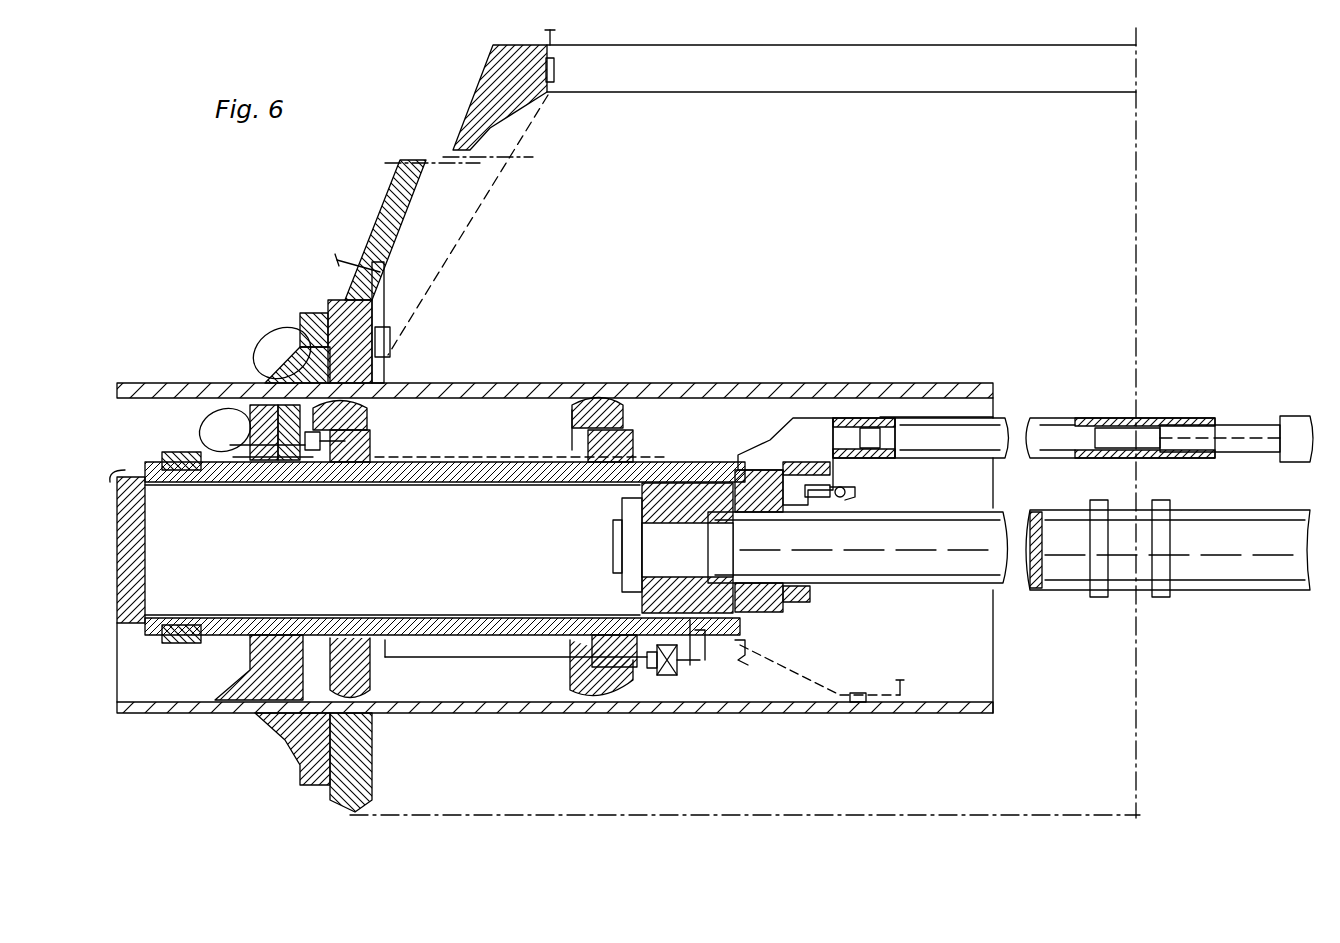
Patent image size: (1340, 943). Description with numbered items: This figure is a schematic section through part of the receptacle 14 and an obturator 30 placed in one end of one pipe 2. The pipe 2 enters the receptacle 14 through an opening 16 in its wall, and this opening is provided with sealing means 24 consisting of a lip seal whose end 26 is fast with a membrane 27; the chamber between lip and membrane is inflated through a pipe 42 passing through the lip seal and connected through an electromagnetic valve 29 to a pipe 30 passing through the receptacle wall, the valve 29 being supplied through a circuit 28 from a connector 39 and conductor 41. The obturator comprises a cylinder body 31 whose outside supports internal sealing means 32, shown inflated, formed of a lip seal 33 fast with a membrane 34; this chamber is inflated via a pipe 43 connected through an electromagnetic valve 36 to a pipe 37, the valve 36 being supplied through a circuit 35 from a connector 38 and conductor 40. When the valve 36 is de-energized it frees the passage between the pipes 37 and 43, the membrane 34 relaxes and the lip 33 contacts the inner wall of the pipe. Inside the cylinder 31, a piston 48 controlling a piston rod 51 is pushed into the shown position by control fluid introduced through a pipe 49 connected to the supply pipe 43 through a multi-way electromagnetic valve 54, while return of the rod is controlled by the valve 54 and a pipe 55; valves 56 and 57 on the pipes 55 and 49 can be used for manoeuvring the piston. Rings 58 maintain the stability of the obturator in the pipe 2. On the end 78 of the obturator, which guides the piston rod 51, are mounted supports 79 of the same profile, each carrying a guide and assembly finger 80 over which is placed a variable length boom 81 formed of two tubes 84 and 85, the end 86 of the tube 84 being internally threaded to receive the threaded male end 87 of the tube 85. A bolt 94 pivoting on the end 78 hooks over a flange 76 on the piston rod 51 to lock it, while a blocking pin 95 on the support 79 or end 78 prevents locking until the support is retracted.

The pipe 2 is at (130, 388).
The receptacle 14 is at (455, 150).
The opening 16 is at (370, 713).
The sealing means 24 is at (305, 290).
The end of the lip 26 is at (262, 382).
The membrane 27 is at (263, 345).
The circuit 28 is at (440, 255).
The electromagnetic valve 29 is at (392, 345).
The pipe / obturator 30 is at (362, 340).
The cylinder body 31 is at (140, 560).
The internal sealing means 32 is at (187, 427).
The lip seal 33 is at (228, 410).
The membrane 34 is at (205, 440).
The circuit 35 is at (475, 462).
The electromagnetic valve 36 is at (318, 455).
The pipe 37 is at (290, 478).
The connector 38 is at (860, 703).
The connector 39 is at (552, 85).
The conductor 40 is at (905, 685).
The conductor 41 is at (556, 52).
The pipe 42 is at (390, 285).
The pipe 43 is at (245, 478).
The piston 48 is at (650, 600).
The pipe 49 is at (165, 618).
The piston rod 51 is at (985, 570).
The electromagnetic valve 54 is at (667, 676).
The pipe 55 is at (705, 655).
The valve 56 is at (747, 666).
The valve 57 is at (685, 675).
The rings 58 is at (380, 385).
The flange 76 is at (1099, 597).
The end of the obturator 78 is at (700, 462).
The support 79 is at (772, 440).
The guide and assembly finger 80 is at (880, 420).
The variable length boom 81 is at (1086, 404).
The tube 84 is at (1005, 418).
The tube 85 is at (1295, 416).
The end of the tube 86 is at (1140, 428).
The male end 87 is at (1235, 428).
The bolt 94 is at (842, 487).
The blocking pin 95 is at (815, 485).